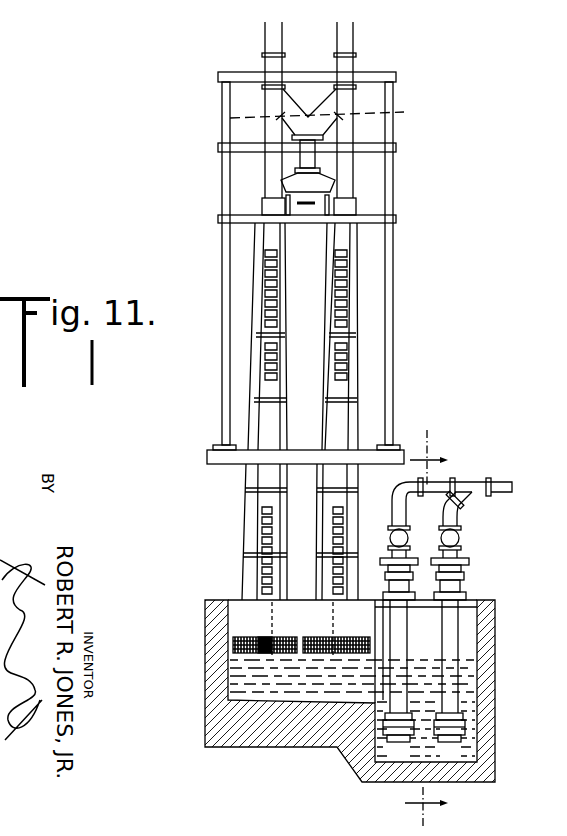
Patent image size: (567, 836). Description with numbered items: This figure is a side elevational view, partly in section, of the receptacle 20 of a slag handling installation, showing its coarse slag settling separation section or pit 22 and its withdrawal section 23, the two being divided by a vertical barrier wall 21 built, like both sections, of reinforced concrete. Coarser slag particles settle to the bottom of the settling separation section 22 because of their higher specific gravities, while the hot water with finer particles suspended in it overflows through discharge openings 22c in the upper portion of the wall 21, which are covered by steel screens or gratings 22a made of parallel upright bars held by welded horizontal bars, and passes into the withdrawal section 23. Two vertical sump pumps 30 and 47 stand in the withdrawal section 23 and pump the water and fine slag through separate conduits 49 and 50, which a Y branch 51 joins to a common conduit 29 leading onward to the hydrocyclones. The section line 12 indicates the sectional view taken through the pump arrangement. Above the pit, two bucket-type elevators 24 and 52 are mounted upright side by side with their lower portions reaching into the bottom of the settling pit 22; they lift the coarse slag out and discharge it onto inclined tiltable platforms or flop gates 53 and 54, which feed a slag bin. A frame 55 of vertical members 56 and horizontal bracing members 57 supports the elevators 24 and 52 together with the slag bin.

The section line 12- 12 is at (430, 629).
The receptacle 20 is at (337, 755).
The vertical barrier wall 21 is at (252, 688).
The settling separation section 22 is at (236, 624).
The screens 22a is at (247, 637).
The water-overflow discharge openings 22c is at (290, 637).
The withdrawal section 23 is at (478, 655).
The bucket-type elevator 24 is at (268, 290).
The common conduit 29 is at (505, 481).
The sump pump 30 is at (398, 712).
The sump pump 47 is at (458, 695).
The conduit 49 is at (393, 508).
The conduit 50 is at (455, 526).
The Y branch 51 is at (467, 482).
The bucket-type elevator 52 is at (347, 298).
The inclined tiltable platform or flop gate 53 is at (222, 116).
The inclined tiltable platform or flop gate 54 is at (330, 110).
The frame 55 is at (219, 197).
The vertical members 56 is at (394, 190).
The horizontal bracing members 57 is at (378, 72).